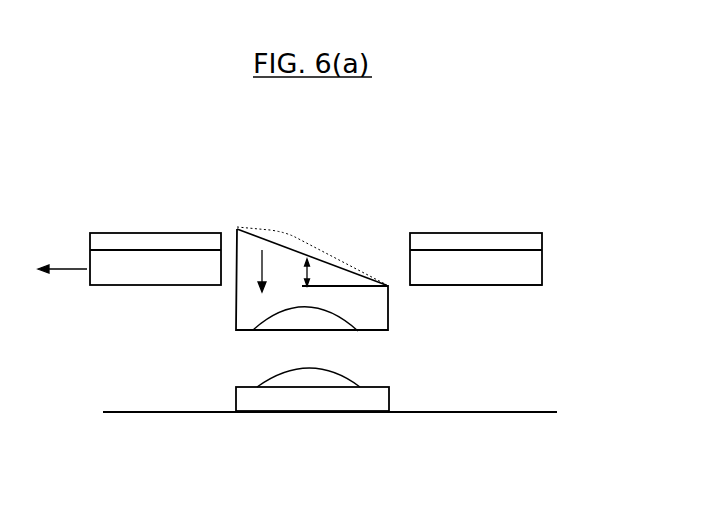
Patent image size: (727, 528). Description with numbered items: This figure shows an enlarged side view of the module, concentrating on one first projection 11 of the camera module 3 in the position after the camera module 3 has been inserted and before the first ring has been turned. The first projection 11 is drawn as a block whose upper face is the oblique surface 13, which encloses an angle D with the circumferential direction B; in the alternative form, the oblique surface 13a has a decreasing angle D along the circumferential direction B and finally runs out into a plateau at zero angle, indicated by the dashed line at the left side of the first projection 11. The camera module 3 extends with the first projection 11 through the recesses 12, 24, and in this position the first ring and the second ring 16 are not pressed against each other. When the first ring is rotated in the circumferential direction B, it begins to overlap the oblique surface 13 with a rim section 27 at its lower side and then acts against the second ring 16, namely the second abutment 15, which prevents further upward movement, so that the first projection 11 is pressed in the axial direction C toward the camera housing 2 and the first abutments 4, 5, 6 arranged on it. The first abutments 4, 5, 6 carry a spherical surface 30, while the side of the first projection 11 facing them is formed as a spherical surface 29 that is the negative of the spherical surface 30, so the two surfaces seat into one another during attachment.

The camera housing 2 is at (330, 432).
The camera module 3 is at (155, 288).
The first abutment 4 is at (380, 436).
The first abutment 5 is at (380, 436).
The first abutment 6 is at (313, 400).
The first projection 11 is at (373, 315).
The recess 12 is at (343, 248).
The recess 24 is at (312, 199).
The oblique surface 13 is at (357, 266).
The alternative oblique surface 13a is at (293, 236).
The second abutment 15 is at (528, 241).
The second ring 16 is at (492, 213).
The rim section 27 is at (527, 272).
The spherical surface 29 is at (346, 322).
The spherical surface 30 is at (337, 379).
The circumferential direction B is at (62, 259).
The axial direction C is at (254, 271).
The angle D is at (296, 272).